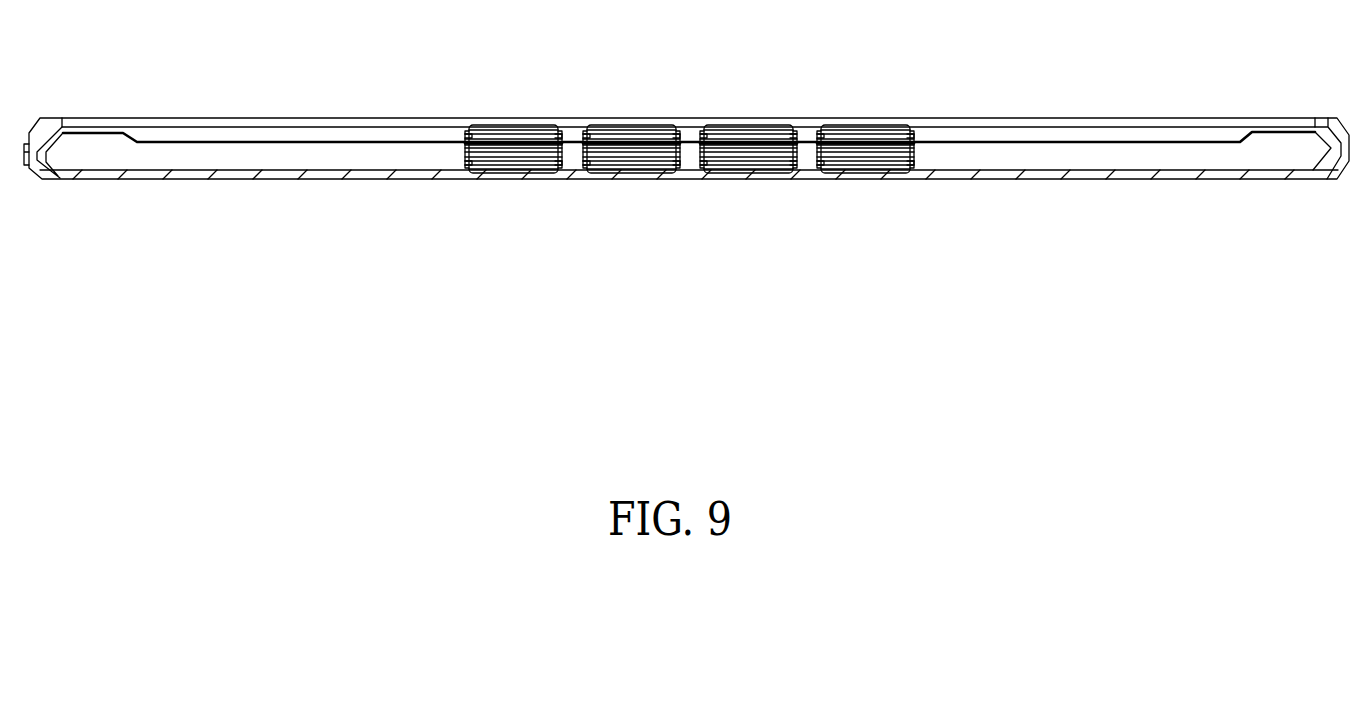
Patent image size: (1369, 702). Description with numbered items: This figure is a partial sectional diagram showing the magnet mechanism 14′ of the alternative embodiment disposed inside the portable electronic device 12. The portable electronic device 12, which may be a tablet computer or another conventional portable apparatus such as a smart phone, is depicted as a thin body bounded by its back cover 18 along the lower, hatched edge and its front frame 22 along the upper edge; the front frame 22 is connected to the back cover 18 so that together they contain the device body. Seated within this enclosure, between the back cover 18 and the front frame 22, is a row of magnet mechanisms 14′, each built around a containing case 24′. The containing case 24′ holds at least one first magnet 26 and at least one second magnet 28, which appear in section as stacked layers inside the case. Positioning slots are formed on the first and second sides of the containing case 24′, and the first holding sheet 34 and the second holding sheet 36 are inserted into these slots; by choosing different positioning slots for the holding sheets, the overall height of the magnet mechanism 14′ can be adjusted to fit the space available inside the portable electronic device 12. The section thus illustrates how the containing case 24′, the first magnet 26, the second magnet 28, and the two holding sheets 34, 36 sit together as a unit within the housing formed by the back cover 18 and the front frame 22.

The portable electronic device 12 is at (1172, 266).
The back cover 18 is at (1067, 178).
The front frame 22 is at (1126, 122).
The magnet mechanism 14′ is at (689, 242).
The containing case 24′ is at (797, 165).
The first magnet 26 is at (761, 231).
The second magnet 28 is at (717, 131).
The first holding sheet 34 is at (750, 160).
The second holding sheet 36 is at (707, 131).